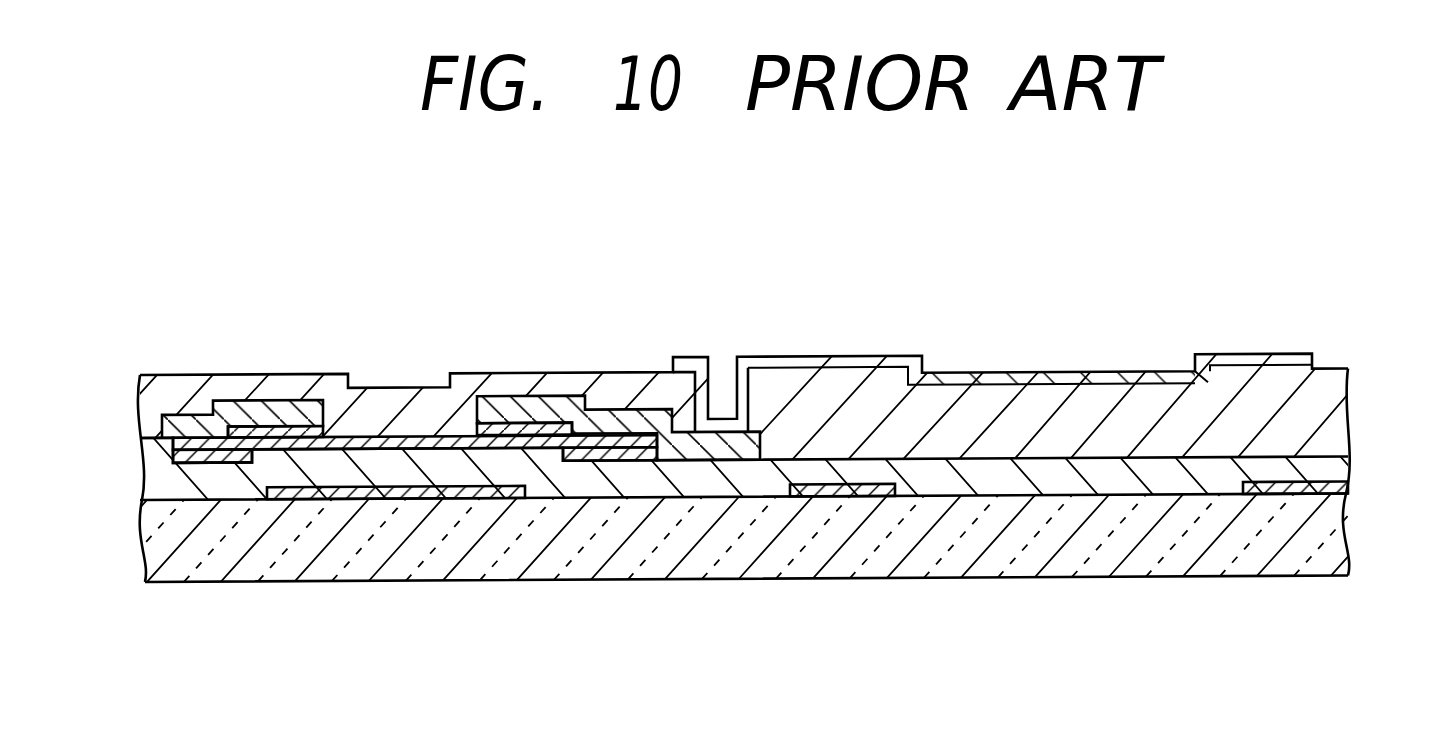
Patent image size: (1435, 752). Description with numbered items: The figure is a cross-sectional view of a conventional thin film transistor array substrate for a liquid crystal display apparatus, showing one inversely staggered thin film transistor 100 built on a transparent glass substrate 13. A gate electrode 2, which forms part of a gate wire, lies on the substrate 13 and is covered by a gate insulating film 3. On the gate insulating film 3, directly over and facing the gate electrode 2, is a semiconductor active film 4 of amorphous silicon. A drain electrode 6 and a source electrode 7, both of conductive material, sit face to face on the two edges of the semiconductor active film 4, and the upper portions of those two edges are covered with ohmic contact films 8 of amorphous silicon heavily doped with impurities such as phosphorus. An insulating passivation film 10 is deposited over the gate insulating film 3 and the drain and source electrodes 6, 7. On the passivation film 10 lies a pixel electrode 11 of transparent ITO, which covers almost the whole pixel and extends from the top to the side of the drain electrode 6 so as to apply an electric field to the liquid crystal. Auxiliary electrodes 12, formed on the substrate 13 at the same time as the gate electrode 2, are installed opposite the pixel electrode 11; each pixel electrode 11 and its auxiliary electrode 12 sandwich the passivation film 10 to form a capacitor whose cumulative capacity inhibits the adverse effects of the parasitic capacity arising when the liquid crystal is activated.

The gate electrode 2 is at (410, 497).
The gate insulating film 3 is at (1335, 466).
The semiconductor active film 4 is at (366, 445).
The drain electrode 6 is at (512, 412).
The source electrode 7 is at (282, 418).
The ohmic contact film 8 is at (253, 403).
The passivation film 10 is at (1330, 410).
The pixel electrode 11 is at (1110, 383).
The auxiliary electrode 12 is at (860, 487).
The substrate 13 is at (1035, 572).
The thin film transistor 100 is at (432, 346).